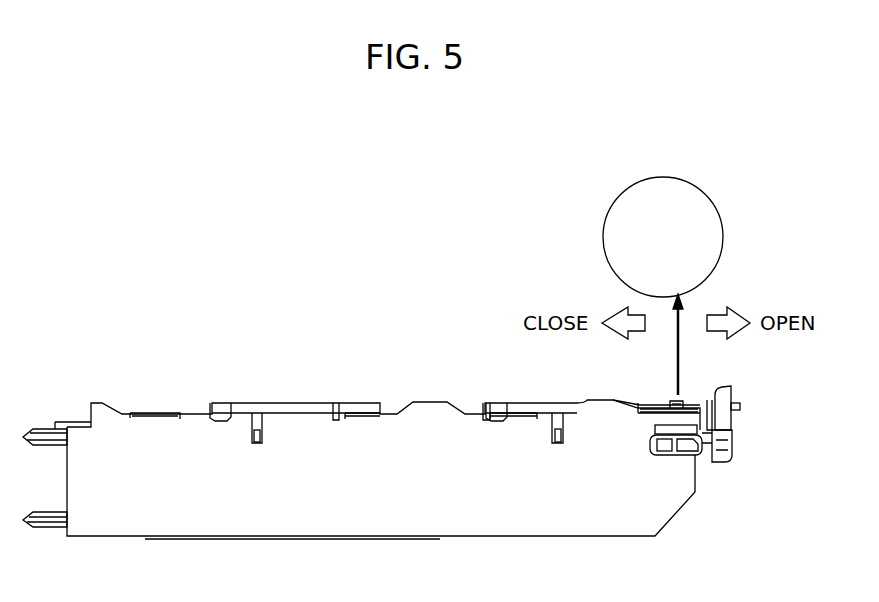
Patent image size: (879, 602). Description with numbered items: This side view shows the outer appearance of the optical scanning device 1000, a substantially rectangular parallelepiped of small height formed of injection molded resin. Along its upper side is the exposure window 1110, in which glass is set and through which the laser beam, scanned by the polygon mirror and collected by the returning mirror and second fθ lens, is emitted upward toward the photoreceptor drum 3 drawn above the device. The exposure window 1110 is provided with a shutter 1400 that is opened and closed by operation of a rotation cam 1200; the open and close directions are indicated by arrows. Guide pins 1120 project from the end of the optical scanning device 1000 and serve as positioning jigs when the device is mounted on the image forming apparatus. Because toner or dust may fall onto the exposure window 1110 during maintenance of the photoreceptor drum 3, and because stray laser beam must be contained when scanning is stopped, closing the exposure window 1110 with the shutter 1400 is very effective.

The photoreceptor drum 3 is at (654, 177).
The optical scanning device 1000 is at (314, 346).
The exposure window 1110 is at (676, 396).
The guide pins 1120 is at (34, 428).
The rotation cam 1200 is at (741, 386).
The shutter 1400 is at (713, 402).